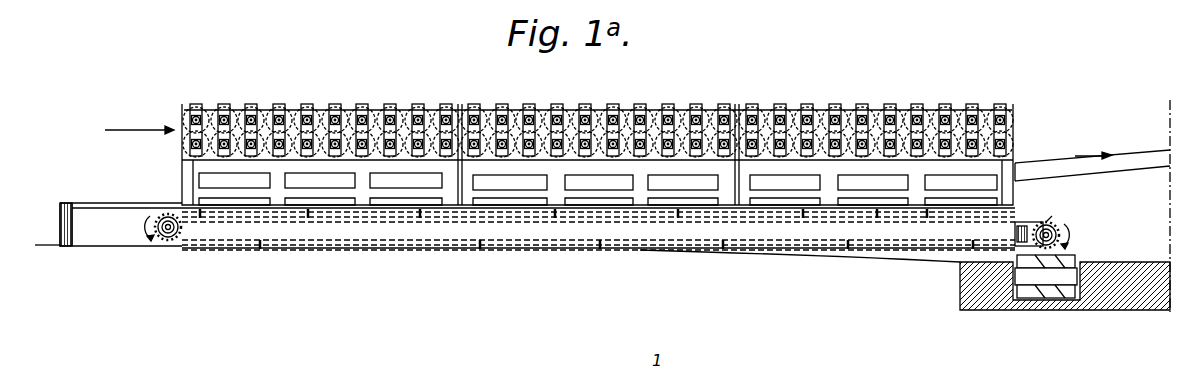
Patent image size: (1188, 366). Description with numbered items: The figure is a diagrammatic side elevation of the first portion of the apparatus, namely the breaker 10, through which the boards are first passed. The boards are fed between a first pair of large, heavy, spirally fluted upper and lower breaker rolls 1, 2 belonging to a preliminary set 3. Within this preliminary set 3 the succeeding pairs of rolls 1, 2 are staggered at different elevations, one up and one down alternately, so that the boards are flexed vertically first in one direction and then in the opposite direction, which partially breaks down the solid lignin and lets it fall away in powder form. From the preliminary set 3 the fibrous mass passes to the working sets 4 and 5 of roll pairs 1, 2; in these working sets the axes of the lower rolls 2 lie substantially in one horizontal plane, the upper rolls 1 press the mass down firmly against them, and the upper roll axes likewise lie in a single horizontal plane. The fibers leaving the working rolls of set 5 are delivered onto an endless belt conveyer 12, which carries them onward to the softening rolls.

The upper breaker roll 1 is at (226, 108).
The lower breaker roll 2 is at (242, 160).
The preliminary set 3 is at (458, 100).
The working set 4 is at (735, 100).
The working set 5 is at (1012, 100).
The breaker 10 is at (612, 164).
The endless belt conveyer 12 is at (1142, 152).